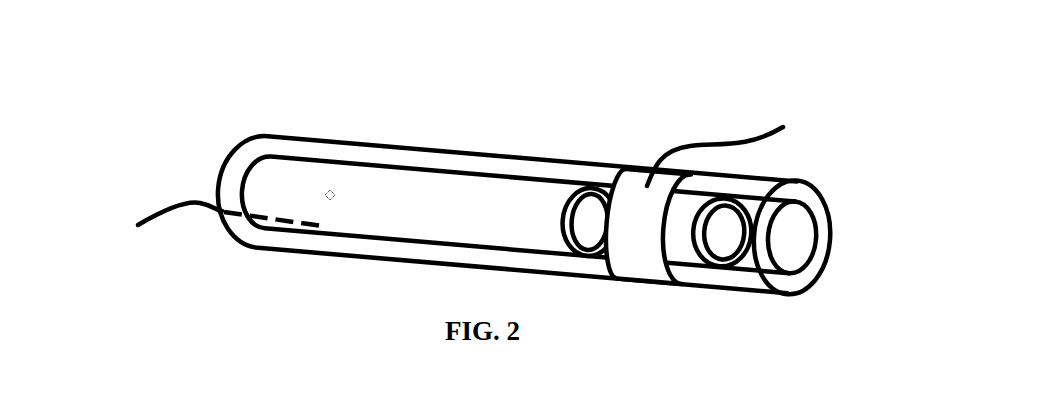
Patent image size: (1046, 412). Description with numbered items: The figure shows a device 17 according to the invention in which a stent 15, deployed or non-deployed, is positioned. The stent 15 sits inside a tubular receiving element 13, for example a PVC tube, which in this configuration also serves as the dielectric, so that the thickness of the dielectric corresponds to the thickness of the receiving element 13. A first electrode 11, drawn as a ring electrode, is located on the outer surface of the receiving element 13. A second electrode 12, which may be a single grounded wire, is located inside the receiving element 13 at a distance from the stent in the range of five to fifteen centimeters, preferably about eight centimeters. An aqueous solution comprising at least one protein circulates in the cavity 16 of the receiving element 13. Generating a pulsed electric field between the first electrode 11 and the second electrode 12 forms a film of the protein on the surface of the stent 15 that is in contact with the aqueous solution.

The first electrode 11 is at (637, 200).
The second electrode 12 is at (162, 212).
The receiving element 13 is at (458, 163).
The stent 15 is at (558, 212).
The cavity 16 is at (787, 227).
The device 17 is at (329, 193).